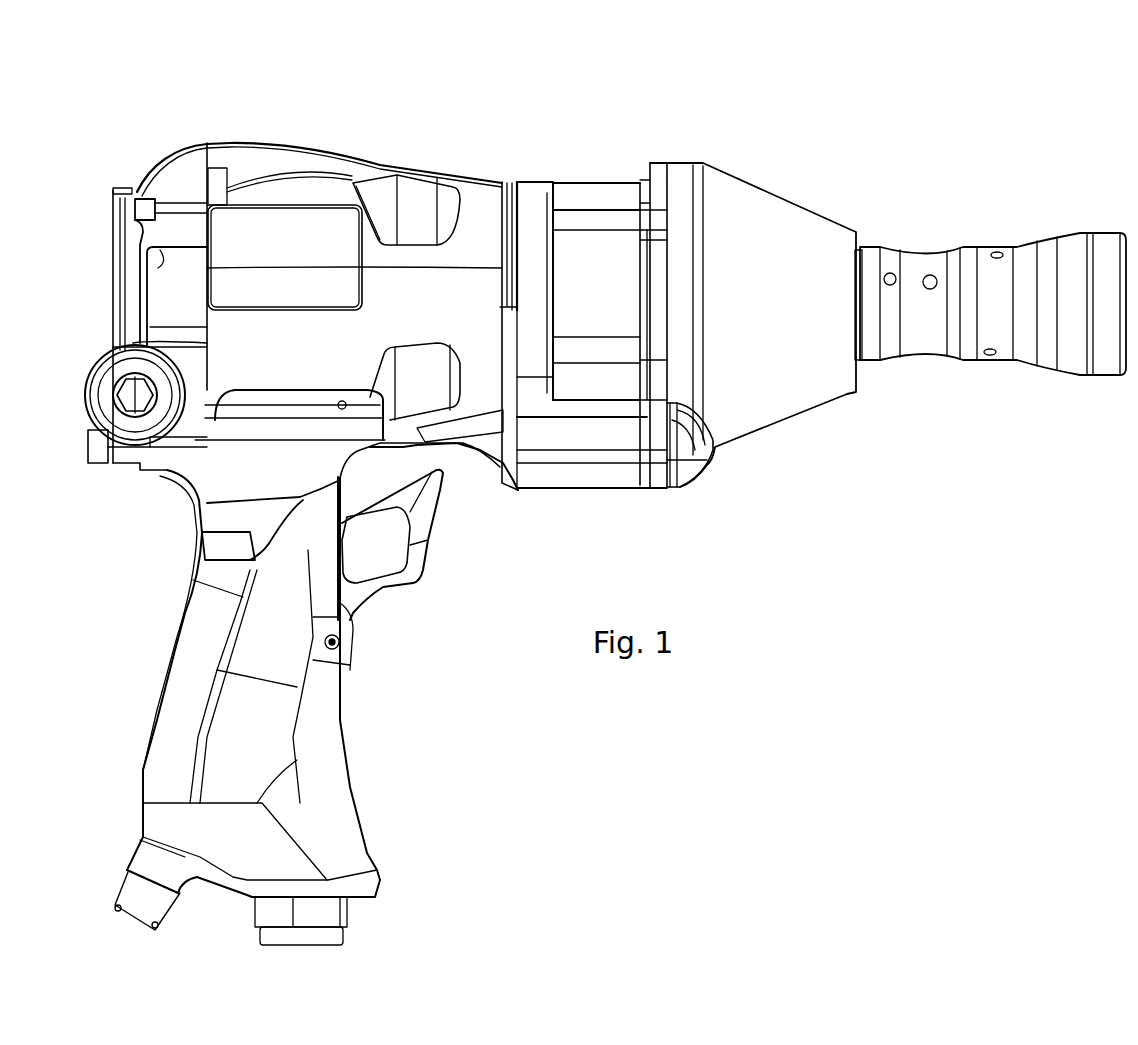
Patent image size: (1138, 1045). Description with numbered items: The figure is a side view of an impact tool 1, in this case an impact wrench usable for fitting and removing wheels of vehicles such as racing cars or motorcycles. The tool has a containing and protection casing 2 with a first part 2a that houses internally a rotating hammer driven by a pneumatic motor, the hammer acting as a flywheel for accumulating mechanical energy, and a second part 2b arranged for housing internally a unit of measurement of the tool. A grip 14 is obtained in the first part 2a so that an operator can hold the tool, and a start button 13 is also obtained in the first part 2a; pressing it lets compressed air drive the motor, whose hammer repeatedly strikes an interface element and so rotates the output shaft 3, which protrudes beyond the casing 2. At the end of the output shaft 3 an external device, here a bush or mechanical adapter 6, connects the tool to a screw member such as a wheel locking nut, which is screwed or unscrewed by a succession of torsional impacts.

The impact tool 1 is at (252, 110).
The containing and protection casing 2 is at (420, 157).
The first part 2a is at (305, 145).
The second part 2b is at (695, 155).
The output shaft 3 is at (860, 228).
The bush or mechanical adapter 6 is at (990, 362).
The start button 13 is at (440, 540).
The grip 14 is at (375, 690).